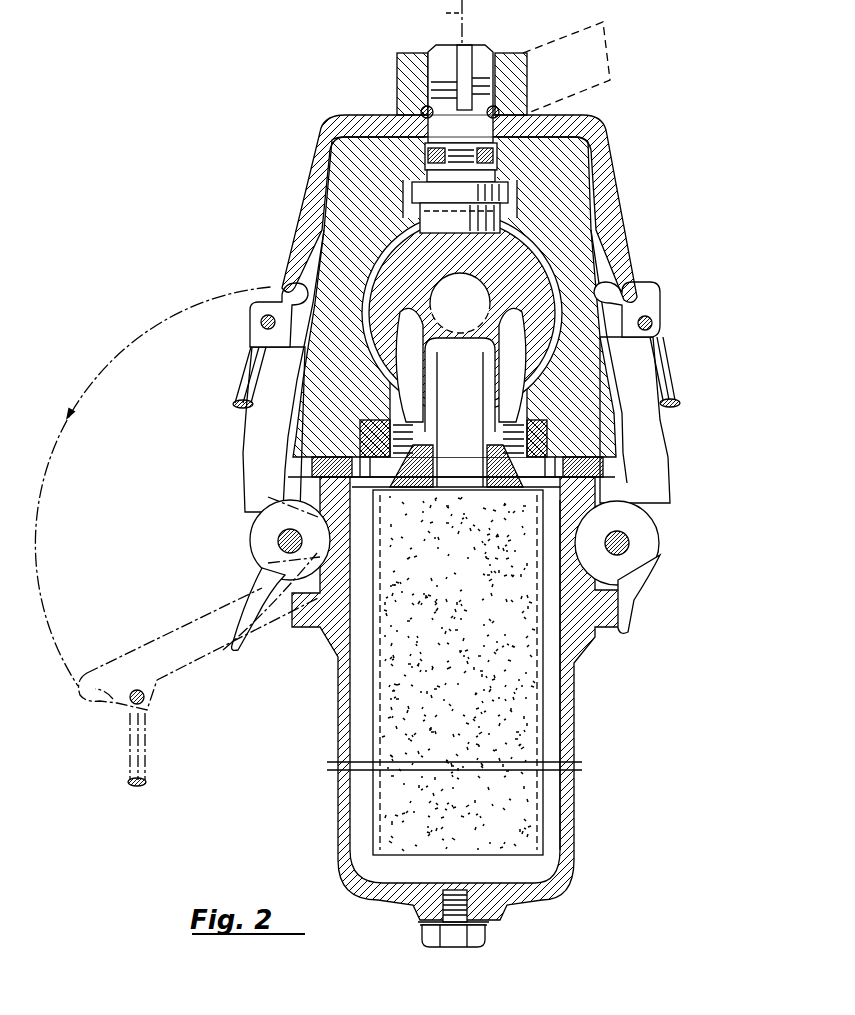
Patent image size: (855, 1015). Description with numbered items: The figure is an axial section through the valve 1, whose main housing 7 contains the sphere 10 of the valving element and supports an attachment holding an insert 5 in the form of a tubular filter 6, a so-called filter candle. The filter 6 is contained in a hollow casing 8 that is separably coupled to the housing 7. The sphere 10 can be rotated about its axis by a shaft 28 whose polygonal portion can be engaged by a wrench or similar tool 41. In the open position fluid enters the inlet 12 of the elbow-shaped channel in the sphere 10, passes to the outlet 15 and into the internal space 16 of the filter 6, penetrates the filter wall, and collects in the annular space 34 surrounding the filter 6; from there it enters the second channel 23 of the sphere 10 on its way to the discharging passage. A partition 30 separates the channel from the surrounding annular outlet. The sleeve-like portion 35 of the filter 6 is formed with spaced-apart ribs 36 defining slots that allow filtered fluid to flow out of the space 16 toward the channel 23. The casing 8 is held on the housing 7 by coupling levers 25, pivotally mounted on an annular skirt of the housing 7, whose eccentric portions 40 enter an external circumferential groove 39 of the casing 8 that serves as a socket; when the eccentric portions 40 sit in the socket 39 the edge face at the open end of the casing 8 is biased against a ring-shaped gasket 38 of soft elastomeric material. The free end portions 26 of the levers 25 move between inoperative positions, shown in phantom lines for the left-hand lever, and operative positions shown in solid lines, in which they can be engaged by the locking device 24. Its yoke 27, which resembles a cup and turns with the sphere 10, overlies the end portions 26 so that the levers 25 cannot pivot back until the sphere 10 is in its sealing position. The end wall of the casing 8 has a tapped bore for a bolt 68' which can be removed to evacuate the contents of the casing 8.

The valve 1 is at (290, 65).
The insert 5 is at (365, 710).
The tubular filter 6 is at (445, 670).
The housing 7 is at (330, 148).
The casing 8 is at (578, 680).
The sphere 10 is at (380, 280).
The inlet 12 is at (470, 288).
The outlet 15 is at (448, 420).
The internal space 16 is at (515, 795).
The second channel 23 is at (407, 345).
The locking device 24 is at (600, 125).
The coupling levers 25 is at (663, 320).
The free end portions 26 is at (312, 282).
The yoke 27 is at (378, 116).
The shaft 28 is at (438, 68).
The partition 30 is at (497, 370).
The annular space 34 is at (550, 710).
The sleeve-like portion 35 is at (400, 488).
The ribs 36 is at (518, 488).
The gasket 38 is at (313, 463).
The circumferential groove 39 is at (290, 560).
The eccentric portions 40 is at (267, 523).
The tool 41 is at (562, 40).
The bolt 68' is at (499, 918).